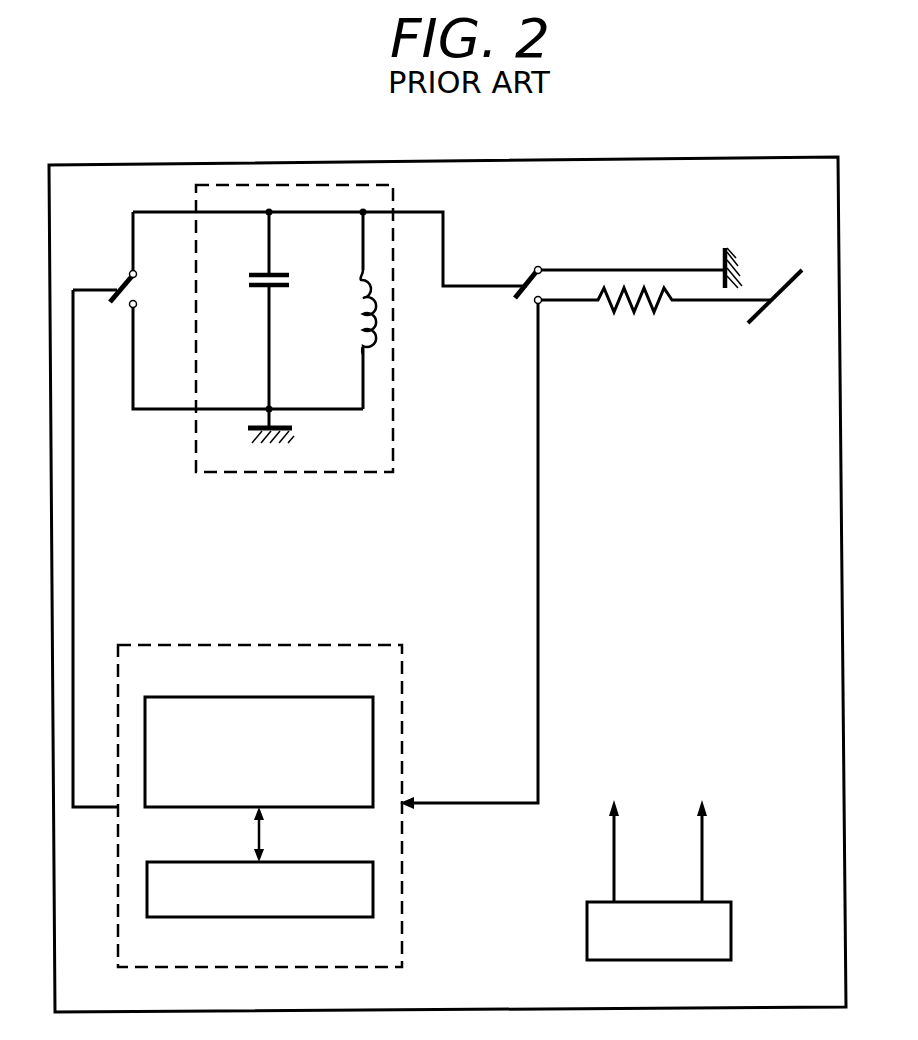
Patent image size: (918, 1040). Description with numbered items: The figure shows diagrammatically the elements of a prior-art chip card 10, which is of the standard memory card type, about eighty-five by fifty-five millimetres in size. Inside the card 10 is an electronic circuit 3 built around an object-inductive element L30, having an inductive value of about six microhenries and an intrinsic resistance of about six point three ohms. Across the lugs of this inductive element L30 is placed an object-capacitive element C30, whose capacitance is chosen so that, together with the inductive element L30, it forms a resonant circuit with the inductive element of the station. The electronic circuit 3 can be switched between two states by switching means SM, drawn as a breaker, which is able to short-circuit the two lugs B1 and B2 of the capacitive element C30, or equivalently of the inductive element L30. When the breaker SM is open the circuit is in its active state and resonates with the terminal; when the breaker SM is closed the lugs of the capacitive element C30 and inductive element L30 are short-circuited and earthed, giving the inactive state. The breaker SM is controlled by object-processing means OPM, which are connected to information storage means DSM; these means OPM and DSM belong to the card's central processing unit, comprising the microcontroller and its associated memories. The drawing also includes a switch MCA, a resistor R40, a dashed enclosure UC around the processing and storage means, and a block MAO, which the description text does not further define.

The card 10 is at (484, 172).
The electronic circuit 3 is at (395, 426).
The object-capacitive element C30 is at (276, 272).
The object-inductive element L30 is at (350, 306).
The switching means SM is at (124, 280).
The lug B1 is at (139, 272).
The lug B2 is at (138, 307).
The mode change switch MCA is at (532, 270).
The resistor R40 is at (626, 313).
The microcontroller unit UC is at (400, 903).
The object-processing means OPM is at (263, 702).
The information storage means DSM is at (257, 912).
The main oscillator MAO is at (731, 927).